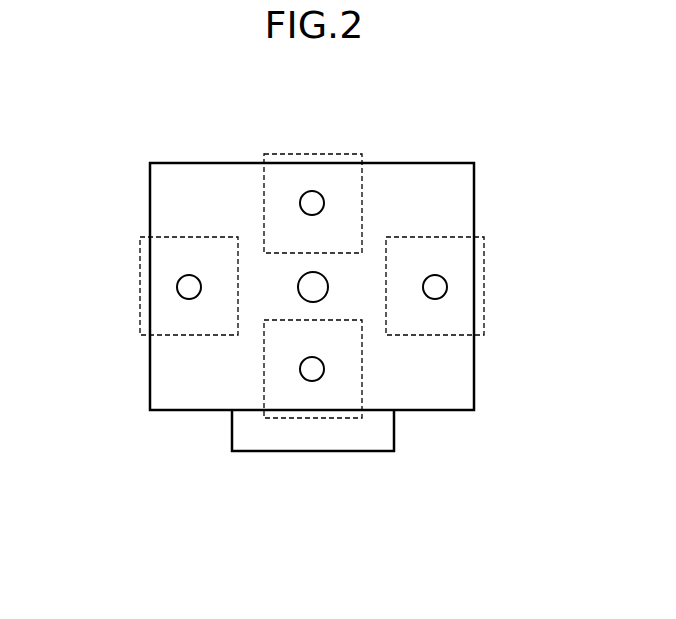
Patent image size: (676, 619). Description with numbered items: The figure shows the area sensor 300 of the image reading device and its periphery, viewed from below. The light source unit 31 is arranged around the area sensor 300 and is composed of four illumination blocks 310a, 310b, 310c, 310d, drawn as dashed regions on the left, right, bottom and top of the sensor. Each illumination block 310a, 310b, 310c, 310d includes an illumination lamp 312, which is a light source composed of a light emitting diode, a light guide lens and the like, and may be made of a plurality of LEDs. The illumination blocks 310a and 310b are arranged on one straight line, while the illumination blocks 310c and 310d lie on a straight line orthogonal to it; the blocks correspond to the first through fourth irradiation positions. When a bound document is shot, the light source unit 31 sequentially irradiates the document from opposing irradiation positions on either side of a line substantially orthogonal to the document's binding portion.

The light source unit 31 is at (398, 193).
The area sensor 300 is at (326, 295).
The illumination lamp 312 is at (309, 215).
The illumination block 310a is at (140, 283).
The illumination block 310b is at (486, 284).
The illumination block 310c is at (313, 418).
The illumination block 310d is at (313, 154).